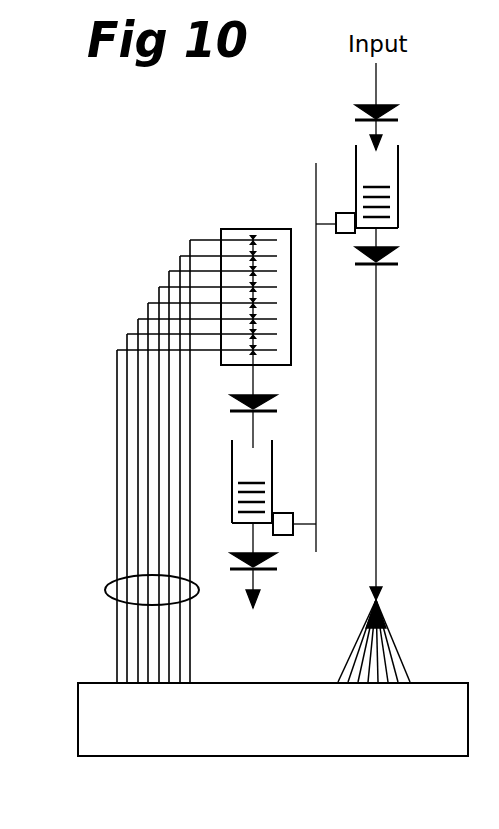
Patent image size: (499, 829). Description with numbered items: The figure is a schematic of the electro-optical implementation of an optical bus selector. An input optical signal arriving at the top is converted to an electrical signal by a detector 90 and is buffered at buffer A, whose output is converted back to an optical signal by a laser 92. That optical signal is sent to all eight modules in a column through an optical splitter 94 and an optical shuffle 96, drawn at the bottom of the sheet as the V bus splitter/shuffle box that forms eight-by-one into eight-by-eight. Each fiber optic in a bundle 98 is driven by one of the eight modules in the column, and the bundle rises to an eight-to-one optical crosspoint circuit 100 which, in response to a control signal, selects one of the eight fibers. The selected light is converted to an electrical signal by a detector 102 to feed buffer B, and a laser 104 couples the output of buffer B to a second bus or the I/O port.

The detector 90 is at (386, 104).
The laser 92 is at (397, 253).
The optical splitter 94 is at (390, 623).
The optical shuffle 96 is at (427, 680).
The bundle 98 is at (105, 590).
The 8:1 optical crosspoint circuit 100 is at (232, 228).
The detector 102 is at (263, 403).
The laser 104 is at (263, 562).